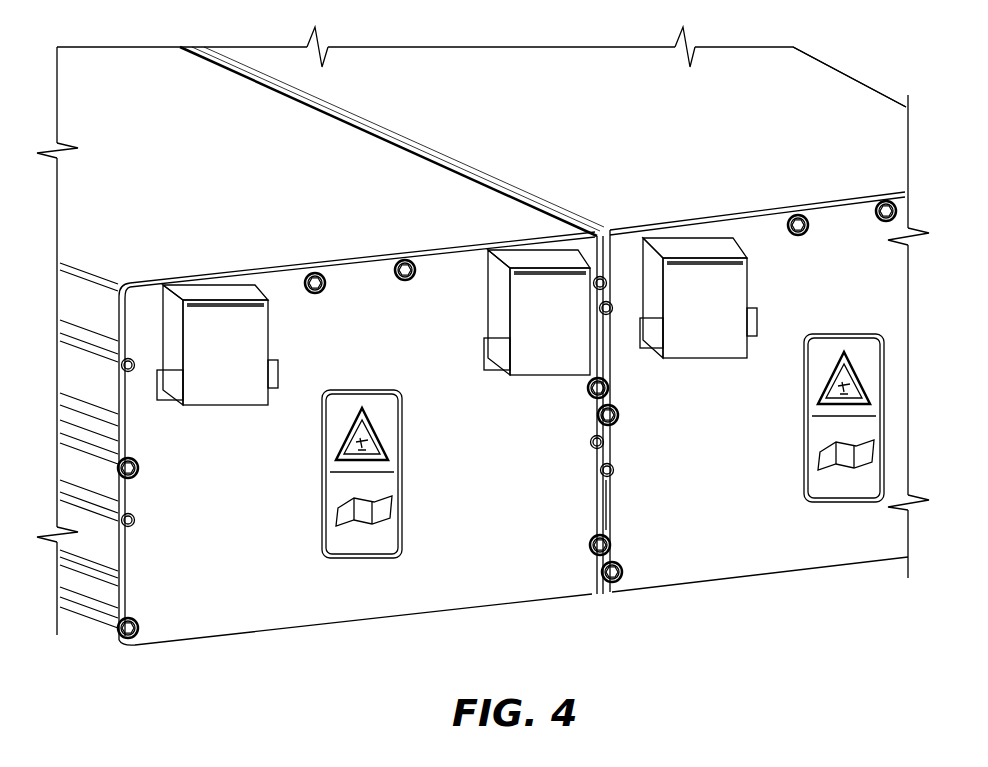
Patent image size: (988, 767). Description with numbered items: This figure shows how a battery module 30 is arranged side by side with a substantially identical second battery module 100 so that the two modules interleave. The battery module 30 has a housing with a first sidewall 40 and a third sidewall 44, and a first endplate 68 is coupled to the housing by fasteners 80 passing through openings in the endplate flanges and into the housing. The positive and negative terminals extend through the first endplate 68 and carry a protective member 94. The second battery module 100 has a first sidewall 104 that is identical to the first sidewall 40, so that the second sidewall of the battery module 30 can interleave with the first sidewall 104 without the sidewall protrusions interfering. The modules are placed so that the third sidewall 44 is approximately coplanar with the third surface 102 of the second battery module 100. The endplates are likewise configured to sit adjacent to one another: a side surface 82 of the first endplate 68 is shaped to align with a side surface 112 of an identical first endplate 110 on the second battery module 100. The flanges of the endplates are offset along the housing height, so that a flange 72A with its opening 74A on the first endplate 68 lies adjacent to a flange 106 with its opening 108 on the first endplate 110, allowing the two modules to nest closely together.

The battery module 30 is at (107, 70).
The first sidewall 40 is at (75, 305).
The third sidewall 44 is at (172, 205).
The first endplate 68 is at (266, 612).
The flange 72A is at (595, 420).
The opening 74A is at (590, 448).
The fastener 80 is at (127, 634).
The side surface 82 is at (597, 498).
The protective member 94 is at (252, 342).
The second battery module 100 is at (600, 60).
The third surface 102 is at (815, 83).
The first sidewall 104 is at (605, 262).
The flange 106 is at (612, 452).
The opening 108 is at (615, 468).
The first endplate 110 is at (752, 562).
The side surface 112 is at (611, 518).